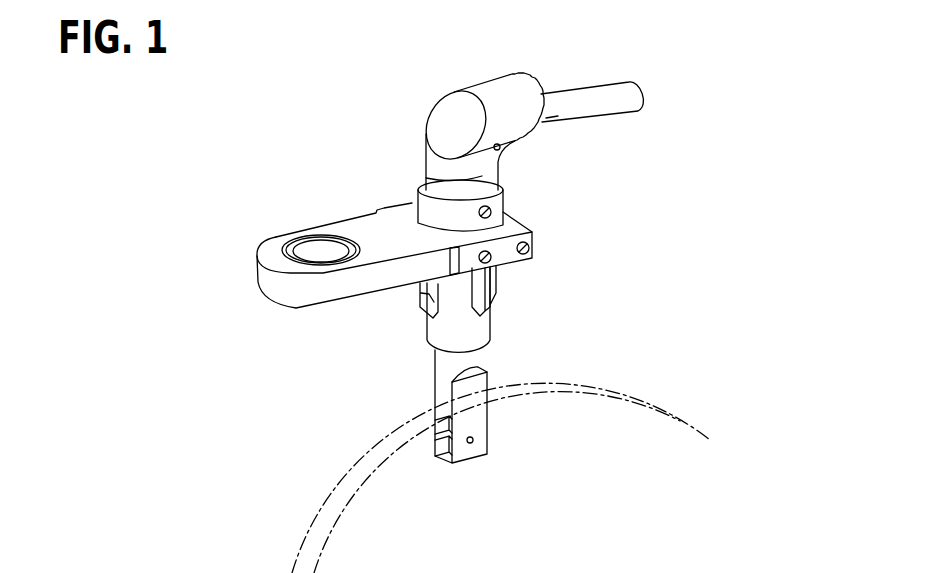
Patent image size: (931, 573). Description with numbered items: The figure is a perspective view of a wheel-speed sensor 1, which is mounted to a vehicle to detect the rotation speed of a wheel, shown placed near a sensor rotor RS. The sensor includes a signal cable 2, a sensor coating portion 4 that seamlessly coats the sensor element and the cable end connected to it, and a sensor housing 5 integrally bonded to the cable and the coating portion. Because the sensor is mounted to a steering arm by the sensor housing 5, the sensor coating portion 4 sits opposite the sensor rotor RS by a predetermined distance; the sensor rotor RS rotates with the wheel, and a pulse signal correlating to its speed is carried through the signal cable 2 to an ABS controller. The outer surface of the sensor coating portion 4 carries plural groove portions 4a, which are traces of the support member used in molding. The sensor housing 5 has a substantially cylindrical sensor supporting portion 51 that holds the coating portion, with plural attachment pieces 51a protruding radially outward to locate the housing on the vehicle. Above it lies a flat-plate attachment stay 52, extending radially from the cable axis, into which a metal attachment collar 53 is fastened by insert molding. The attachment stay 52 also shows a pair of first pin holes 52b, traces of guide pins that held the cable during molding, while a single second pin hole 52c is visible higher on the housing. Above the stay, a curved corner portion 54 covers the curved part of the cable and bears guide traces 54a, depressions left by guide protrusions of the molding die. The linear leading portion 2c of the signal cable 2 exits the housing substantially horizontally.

The wheel-speed sensor 1 is at (236, 132).
The signal cable 2 is at (605, 97).
The leading portion 2c is at (553, 122).
The sensor coating portion 4 is at (478, 432).
The groove portions 4a is at (440, 448).
The sensor housing 5 is at (417, 200).
The sensor supporting portion 51 is at (440, 345).
The attachment pieces 51a is at (497, 278).
The attachment stay 52 is at (350, 227).
The first pin holes 52b is at (534, 247).
The second pin holes 52c is at (423, 190).
The attachment collar 53 is at (284, 247).
The corner portion 54 is at (450, 114).
The guide traces 54a is at (502, 148).
The sensor rotor RS is at (603, 390).